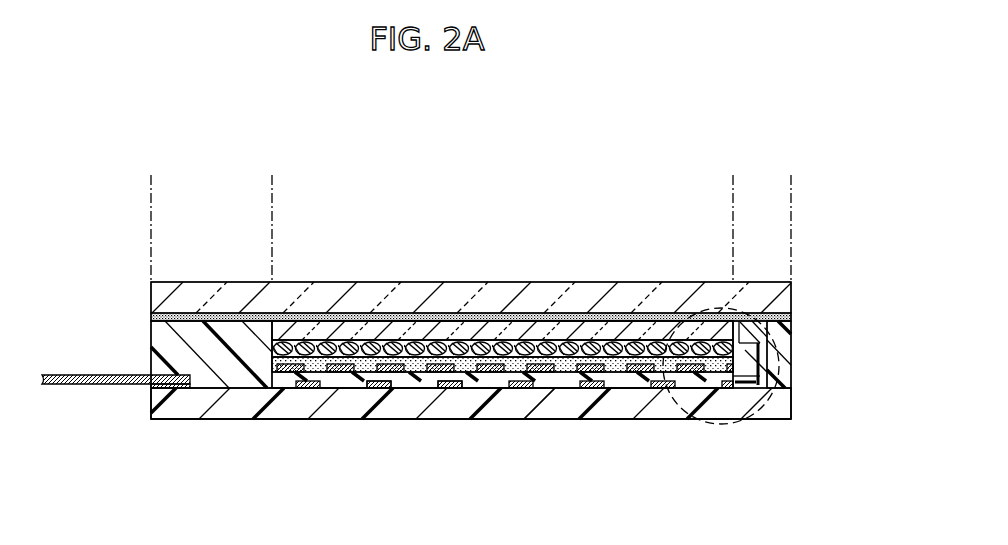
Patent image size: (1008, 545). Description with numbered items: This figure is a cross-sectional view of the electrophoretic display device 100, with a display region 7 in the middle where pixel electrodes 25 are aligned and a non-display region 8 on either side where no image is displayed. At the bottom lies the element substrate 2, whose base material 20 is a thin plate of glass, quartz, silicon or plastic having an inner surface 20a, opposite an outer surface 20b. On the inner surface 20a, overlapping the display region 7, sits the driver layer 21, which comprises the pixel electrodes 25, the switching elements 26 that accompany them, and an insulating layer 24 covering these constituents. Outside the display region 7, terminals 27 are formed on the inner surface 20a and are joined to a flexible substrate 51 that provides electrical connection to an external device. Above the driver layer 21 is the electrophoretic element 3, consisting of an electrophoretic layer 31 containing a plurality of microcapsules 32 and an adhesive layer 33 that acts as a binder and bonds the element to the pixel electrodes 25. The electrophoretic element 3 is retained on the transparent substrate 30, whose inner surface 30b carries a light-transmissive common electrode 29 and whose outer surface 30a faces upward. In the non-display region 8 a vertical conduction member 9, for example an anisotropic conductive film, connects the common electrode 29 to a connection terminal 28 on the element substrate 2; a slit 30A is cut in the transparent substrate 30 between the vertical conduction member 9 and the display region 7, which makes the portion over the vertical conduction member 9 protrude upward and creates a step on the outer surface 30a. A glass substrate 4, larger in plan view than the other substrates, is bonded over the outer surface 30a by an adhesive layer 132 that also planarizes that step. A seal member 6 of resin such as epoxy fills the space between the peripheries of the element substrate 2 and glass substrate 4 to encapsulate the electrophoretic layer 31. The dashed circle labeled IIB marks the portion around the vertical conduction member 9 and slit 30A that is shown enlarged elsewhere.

The electrophoretic display device 100 is at (172, 121).
The non-display region 8 is at (272, 172).
The display region 7 is at (733, 172).
The electrophoretic element 3 is at (502, 282).
The glass substrate 4 is at (305, 282).
The adhesive layer 132 is at (160, 318).
The seal member 6 is at (165, 340).
The common electrode 29 is at (600, 328).
The transparent substrate 30 is at (566, 330).
The outer surface of the transparent substrate 30a is at (630, 330).
The inner surface of the transparent substrate 30b is at (690, 336).
The slit 30A is at (752, 354).
The adhesive layer 33 is at (427, 338).
The microcapsules 32 is at (482, 350).
The electrophoretic layer 31 is at (425, 226).
The vertical conduction member 9 is at (768, 380).
The connection terminal 28 is at (755, 397).
The flexible substrate 51 is at (72, 386).
The terminals 27 is at (168, 392).
The base material 20 is at (233, 411).
The element substrate 2 is at (471, 403).
The inner surface of the base material 20a is at (556, 392).
The lower surface of substrate 20b is at (640, 419).
The driver layer 21 is at (538, 402).
The insulating layer 24 is at (340, 383).
The switching elements 26 is at (373, 386).
The pixel electrodes 25 is at (471, 386).
The enlarged portion shown in FIG. 2B IIB is at (739, 433).